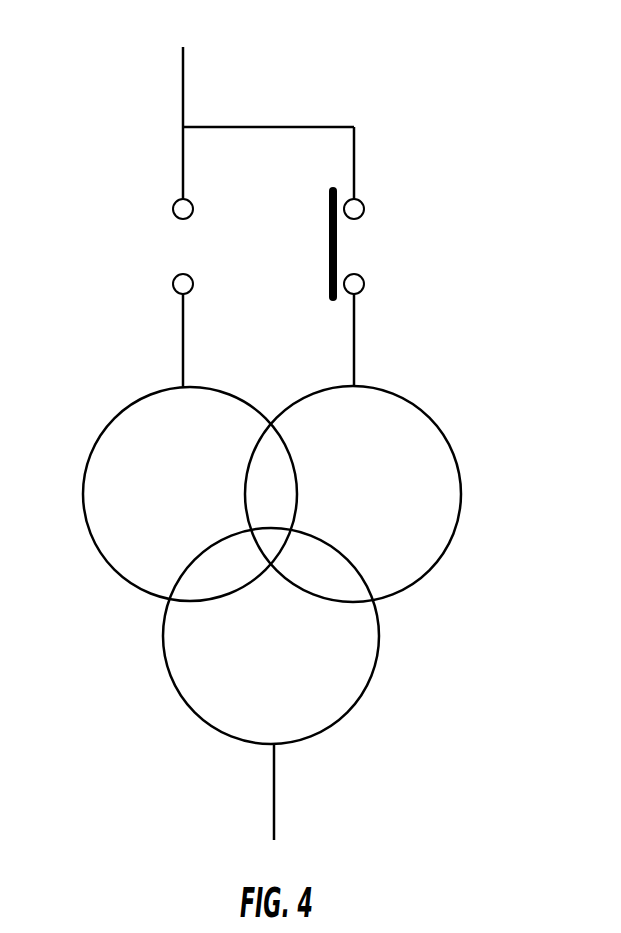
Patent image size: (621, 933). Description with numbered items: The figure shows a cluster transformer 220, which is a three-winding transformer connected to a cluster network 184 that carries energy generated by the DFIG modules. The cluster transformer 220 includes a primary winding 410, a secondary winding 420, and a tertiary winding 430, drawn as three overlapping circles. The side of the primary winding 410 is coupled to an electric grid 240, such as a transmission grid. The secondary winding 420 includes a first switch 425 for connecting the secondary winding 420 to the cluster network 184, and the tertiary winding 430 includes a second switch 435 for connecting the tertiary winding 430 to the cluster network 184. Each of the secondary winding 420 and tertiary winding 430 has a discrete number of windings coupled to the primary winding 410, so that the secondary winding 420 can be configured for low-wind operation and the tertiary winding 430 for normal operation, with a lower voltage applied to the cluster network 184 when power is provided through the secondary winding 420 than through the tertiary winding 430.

The cluster network 184 is at (163, 115).
The cluster transformer 220 is at (442, 158).
The electric grid 240 is at (254, 794).
The primary winding 410 is at (385, 661).
The secondary winding 420 is at (72, 518).
The first switch 425 is at (170, 245).
The tertiary winding 430 is at (470, 475).
The second switch 435 is at (385, 251).